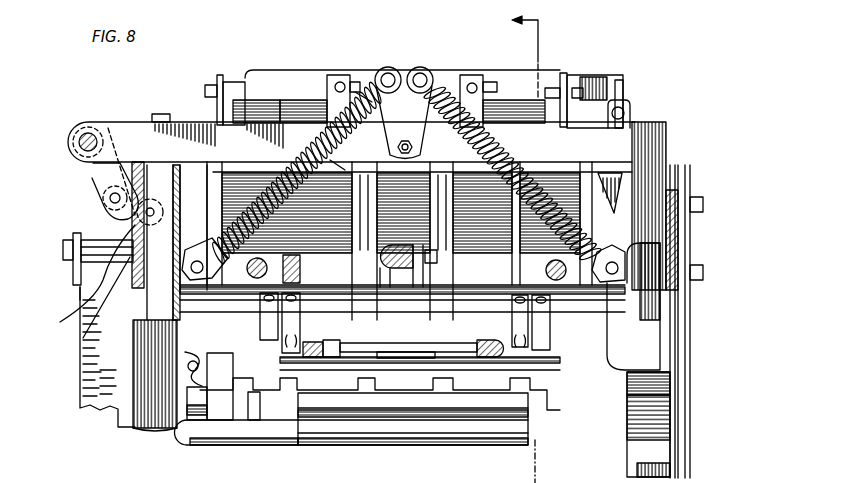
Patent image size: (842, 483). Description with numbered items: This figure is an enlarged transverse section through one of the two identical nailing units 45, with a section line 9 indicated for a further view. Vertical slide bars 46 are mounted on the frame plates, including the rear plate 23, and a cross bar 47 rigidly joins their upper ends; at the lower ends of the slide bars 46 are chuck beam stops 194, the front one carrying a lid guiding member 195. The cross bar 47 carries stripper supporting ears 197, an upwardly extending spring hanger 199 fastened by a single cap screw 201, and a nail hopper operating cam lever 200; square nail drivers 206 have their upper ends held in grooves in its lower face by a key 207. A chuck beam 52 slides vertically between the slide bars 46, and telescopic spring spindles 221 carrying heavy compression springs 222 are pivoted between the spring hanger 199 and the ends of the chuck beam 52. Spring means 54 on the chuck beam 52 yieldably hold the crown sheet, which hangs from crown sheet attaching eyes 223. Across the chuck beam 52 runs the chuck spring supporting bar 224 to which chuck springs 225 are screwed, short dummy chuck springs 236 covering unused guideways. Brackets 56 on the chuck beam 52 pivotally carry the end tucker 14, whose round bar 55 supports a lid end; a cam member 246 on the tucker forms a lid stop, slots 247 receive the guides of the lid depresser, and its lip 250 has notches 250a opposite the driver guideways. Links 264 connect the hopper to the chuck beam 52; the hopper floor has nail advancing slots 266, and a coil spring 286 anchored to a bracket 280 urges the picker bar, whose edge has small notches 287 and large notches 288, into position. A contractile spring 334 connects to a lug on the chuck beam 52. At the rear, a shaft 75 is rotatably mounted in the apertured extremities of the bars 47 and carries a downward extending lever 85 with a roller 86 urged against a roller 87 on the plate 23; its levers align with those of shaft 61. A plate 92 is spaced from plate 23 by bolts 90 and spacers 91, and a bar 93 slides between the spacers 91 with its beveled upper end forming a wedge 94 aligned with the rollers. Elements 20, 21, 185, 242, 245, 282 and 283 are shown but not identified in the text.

The section line 9 is at (536, 249).
The end tucker 14 is at (387, 449).
The cylinder 20 is at (137, 392).
The side plate 21 is at (686, 346).
The rear plate 23 is at (76, 316).
The nailing unit 45 is at (641, 101).
The vertical slide bar 46 is at (153, 183).
The cross bar 47 is at (656, 155).
The chuck beam 52 is at (331, 262).
The spring means 54 is at (392, 256).
The round bar 55 is at (355, 434).
The bracket 56 is at (598, 367).
The shaft 61 is at (250, 273).
The shaft 75 is at (84, 132).
The downward extending lever 85 is at (102, 202).
The roller 86 is at (104, 205).
The roller 87 is at (160, 216).
The bolt 90 is at (66, 253).
The spacer 91 is at (133, 240).
The plate 92 is at (75, 275).
The bar 93 is at (96, 342).
The wedge 94 is at (103, 230).
The block 185 is at (602, 90).
The chuck beam stop 194 is at (660, 376).
The lid guiding member 195 is at (657, 440).
The stripper supporting ear 197 is at (226, 110).
The spring hanger 199 is at (406, 72).
The nail hopper operating cam lever 200 is at (628, 122).
The cap screw 201 is at (412, 147).
The nail driver 206 is at (443, 257).
The key 207 is at (333, 166).
The telescopic spring spindle 221 is at (338, 149).
The compression spring 222 is at (285, 160).
The crown sheet attaching eye 223 is at (480, 345).
The chuck spring supporting bar 224 is at (578, 287).
The chuck spring 225 is at (367, 322).
The dummy chuck spring 236 is at (276, 320).
The plate 242 is at (530, 445).
The block 245 is at (190, 422).
The cam member 246 is at (257, 413).
The slot 247 is at (298, 433).
The lip 250 is at (405, 385).
The notch 250a is at (447, 390).
The link 264 is at (209, 177).
The nail advancing slot 266 is at (284, 254).
The bracket 280 is at (336, 77).
The spring end 282 is at (358, 80).
The hole 283 is at (344, 83).
The coil spring 286 is at (457, 87).
The small notch 287 is at (278, 100).
The large notch 288 is at (316, 98).
The contractile spring 334 is at (188, 362).